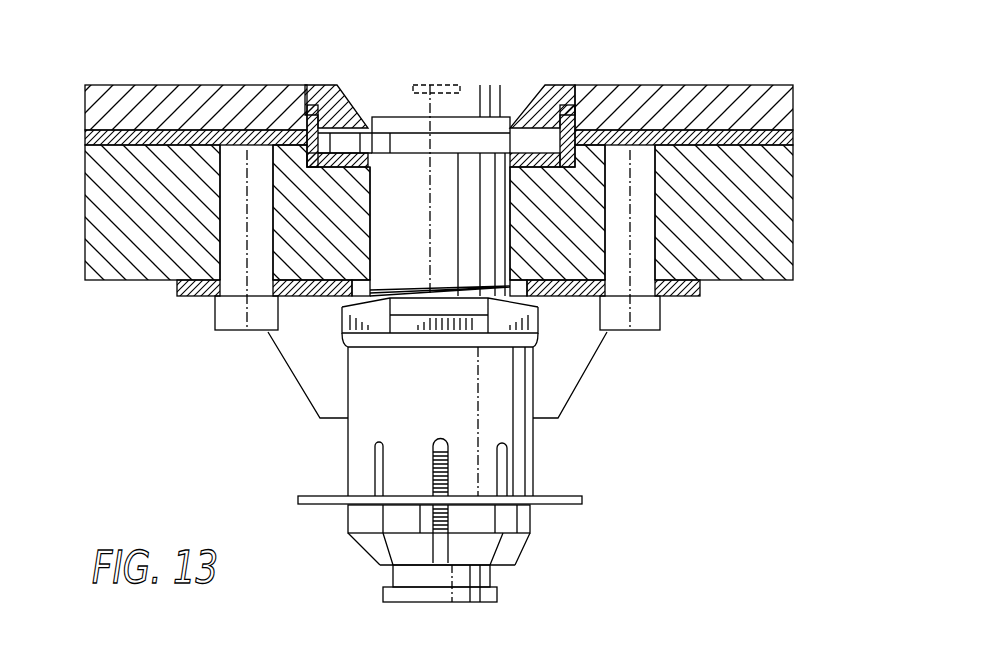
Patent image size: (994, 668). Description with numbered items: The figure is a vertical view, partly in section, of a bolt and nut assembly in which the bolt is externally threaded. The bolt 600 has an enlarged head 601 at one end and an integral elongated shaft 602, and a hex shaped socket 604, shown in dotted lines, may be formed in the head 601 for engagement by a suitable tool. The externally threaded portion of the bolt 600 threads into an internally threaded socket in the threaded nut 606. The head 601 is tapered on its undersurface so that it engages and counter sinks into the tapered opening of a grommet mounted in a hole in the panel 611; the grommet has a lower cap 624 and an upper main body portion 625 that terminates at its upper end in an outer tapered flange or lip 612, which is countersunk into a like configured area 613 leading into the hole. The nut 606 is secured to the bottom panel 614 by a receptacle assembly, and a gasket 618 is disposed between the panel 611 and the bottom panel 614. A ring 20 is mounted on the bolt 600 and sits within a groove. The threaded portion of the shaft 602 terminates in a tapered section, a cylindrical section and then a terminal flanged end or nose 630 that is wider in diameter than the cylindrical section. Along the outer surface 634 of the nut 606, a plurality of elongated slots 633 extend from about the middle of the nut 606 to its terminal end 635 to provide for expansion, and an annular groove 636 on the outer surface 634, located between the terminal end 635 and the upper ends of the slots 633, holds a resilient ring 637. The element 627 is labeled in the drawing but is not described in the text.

The bolt 600 is at (540, 45).
The enlarged head 601 is at (397, 92).
The elongated shaft 602 is at (453, 216).
The hex shaped socket 604 is at (452, 93).
The ring 20 is at (470, 143).
The threaded nut 606 is at (552, 439).
The panel 611 is at (167, 90).
The outer tapered flange or lip 612 is at (577, 86).
The countersunk area 613 is at (298, 92).
The bottom panel 614 is at (113, 270).
The gasket 618 is at (86, 136).
The lower cap 624 is at (310, 163).
The upper main body portion 625 is at (327, 105).
The right retainer base plate 627 is at (580, 130).
The terminal flanged end or nose 630 is at (407, 603).
The elongated slots 633 is at (500, 467).
The outer surface 634 is at (373, 430).
The terminal end 635 is at (380, 566).
The annular groove 636 is at (352, 511).
The resilient ring 637 is at (557, 504).